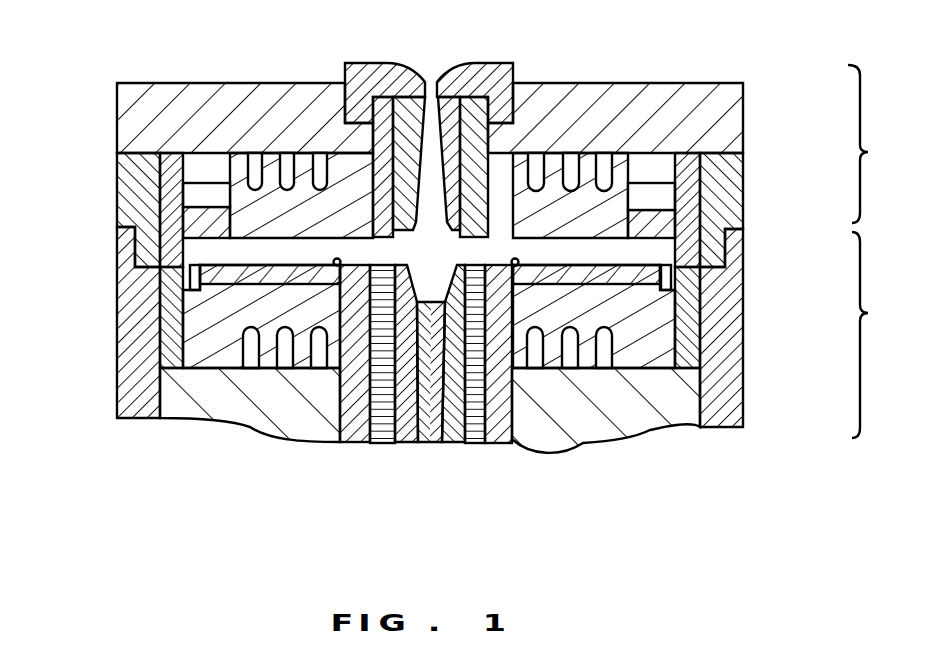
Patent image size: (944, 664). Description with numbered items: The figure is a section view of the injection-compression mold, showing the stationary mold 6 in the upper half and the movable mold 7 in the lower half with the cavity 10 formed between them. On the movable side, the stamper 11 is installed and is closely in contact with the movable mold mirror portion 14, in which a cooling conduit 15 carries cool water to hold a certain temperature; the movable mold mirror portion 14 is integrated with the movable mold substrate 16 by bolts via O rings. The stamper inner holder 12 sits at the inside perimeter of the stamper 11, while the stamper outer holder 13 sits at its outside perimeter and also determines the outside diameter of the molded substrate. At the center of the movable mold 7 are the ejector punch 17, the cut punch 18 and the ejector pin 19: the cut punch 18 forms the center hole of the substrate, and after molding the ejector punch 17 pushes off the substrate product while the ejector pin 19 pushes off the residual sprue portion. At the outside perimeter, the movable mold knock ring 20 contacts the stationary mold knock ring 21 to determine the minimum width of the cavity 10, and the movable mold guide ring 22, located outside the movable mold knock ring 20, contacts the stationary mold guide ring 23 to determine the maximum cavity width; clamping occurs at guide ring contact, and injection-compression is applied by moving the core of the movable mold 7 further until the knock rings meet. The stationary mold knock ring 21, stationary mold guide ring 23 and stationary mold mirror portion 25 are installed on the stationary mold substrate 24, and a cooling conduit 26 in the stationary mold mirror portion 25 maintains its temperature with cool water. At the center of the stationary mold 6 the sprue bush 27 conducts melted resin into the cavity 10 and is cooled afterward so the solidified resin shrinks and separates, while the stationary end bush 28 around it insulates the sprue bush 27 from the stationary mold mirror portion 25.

The stationary mold 6 is at (872, 144).
The movable mold 7 is at (874, 335).
The cavity 10 is at (265, 250).
The stamper 11 is at (235, 287).
The stamper inner holder 12 is at (347, 400).
The stamper outer holder 13 is at (135, 203).
The movable mold mirror portion 14 is at (633, 327).
The cooling conduit 15 is at (567, 357).
The movable mold substrate 16 is at (675, 393).
The ejector punch 17 is at (363, 443).
The cut punch 18 is at (403, 445).
The ejector pin 19 is at (457, 400).
The movable mold knock ring 20 is at (700, 300).
The stationary mold knock ring 21 is at (702, 207).
The movable mold guide ring 22 is at (730, 370).
The stationary mold guide ring 23 is at (723, 176).
The stationary mold substrate 24 is at (720, 110).
The stationary mold mirror portion 25 is at (647, 167).
The cooling conduit 26 is at (573, 167).
The sprue bush 27 is at (372, 63).
The stationary end bush 28 is at (320, 82).